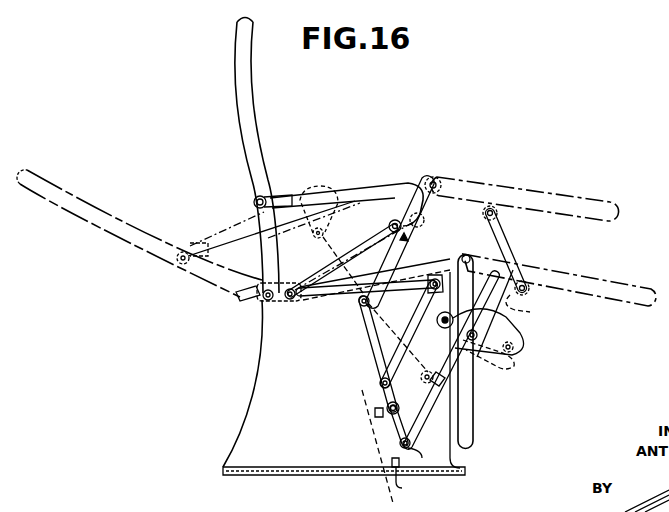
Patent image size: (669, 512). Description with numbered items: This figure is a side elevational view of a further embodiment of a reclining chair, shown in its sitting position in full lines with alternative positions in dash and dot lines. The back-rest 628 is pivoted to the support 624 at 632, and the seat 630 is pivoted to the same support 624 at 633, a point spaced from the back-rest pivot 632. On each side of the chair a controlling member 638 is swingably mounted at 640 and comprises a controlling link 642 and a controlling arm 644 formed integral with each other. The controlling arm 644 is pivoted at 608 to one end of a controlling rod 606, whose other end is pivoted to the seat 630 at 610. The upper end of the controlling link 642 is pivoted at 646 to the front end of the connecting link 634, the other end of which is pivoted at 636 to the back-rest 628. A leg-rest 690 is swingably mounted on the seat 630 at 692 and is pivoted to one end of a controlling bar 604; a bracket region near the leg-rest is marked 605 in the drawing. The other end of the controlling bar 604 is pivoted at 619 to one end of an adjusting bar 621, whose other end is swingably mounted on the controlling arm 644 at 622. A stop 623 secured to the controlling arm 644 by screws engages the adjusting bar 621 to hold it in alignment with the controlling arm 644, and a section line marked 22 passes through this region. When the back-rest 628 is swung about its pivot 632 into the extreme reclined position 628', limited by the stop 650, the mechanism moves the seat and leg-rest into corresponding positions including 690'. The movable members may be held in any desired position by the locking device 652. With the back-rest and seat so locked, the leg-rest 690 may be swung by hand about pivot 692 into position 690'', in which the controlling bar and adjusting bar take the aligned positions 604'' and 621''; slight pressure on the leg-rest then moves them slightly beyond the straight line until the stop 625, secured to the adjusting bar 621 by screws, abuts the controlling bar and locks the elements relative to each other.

The controlling bar 604 is at (458, 359).
The controlling bar position 604'' is at (548, 301).
The pivot bracket 605 is at (508, 315).
The controlling rod 606 is at (403, 340).
The pivot 608 is at (380, 381).
The pivot 610 is at (428, 290).
The pivot 619 is at (410, 447).
The adjusting bar 621 is at (378, 433).
The adjusting bar position 621'' is at (469, 363).
The pivot 622 is at (412, 402).
The stop 623 is at (382, 420).
The support 624 is at (247, 404).
The stop 625 is at (410, 476).
The back-rest 628 is at (264, 156).
The back-rest reclined position 628' is at (216, 233).
The seat 630 is at (318, 296).
The pivot 632 is at (262, 300).
The pivot 633 is at (289, 300).
The connecting link 634 is at (340, 192).
The pivot 636 is at (263, 195).
The controlling member 638 is at (402, 239).
The pivot mounting 640 is at (352, 316).
The controlling link 642 is at (384, 246).
The controlling arm 644 is at (362, 330).
The pivot 646 is at (400, 210).
The stop 650 is at (240, 296).
The locking device 652 is at (284, 193).
The leg-rest 690 is at (487, 352).
The leg-rest reclined position 690' is at (524, 234).
The leg-rest hand-swung position 690'' is at (562, 280).
The pivot 692 is at (470, 256).
The section line 22- 22 is at (360, 402).